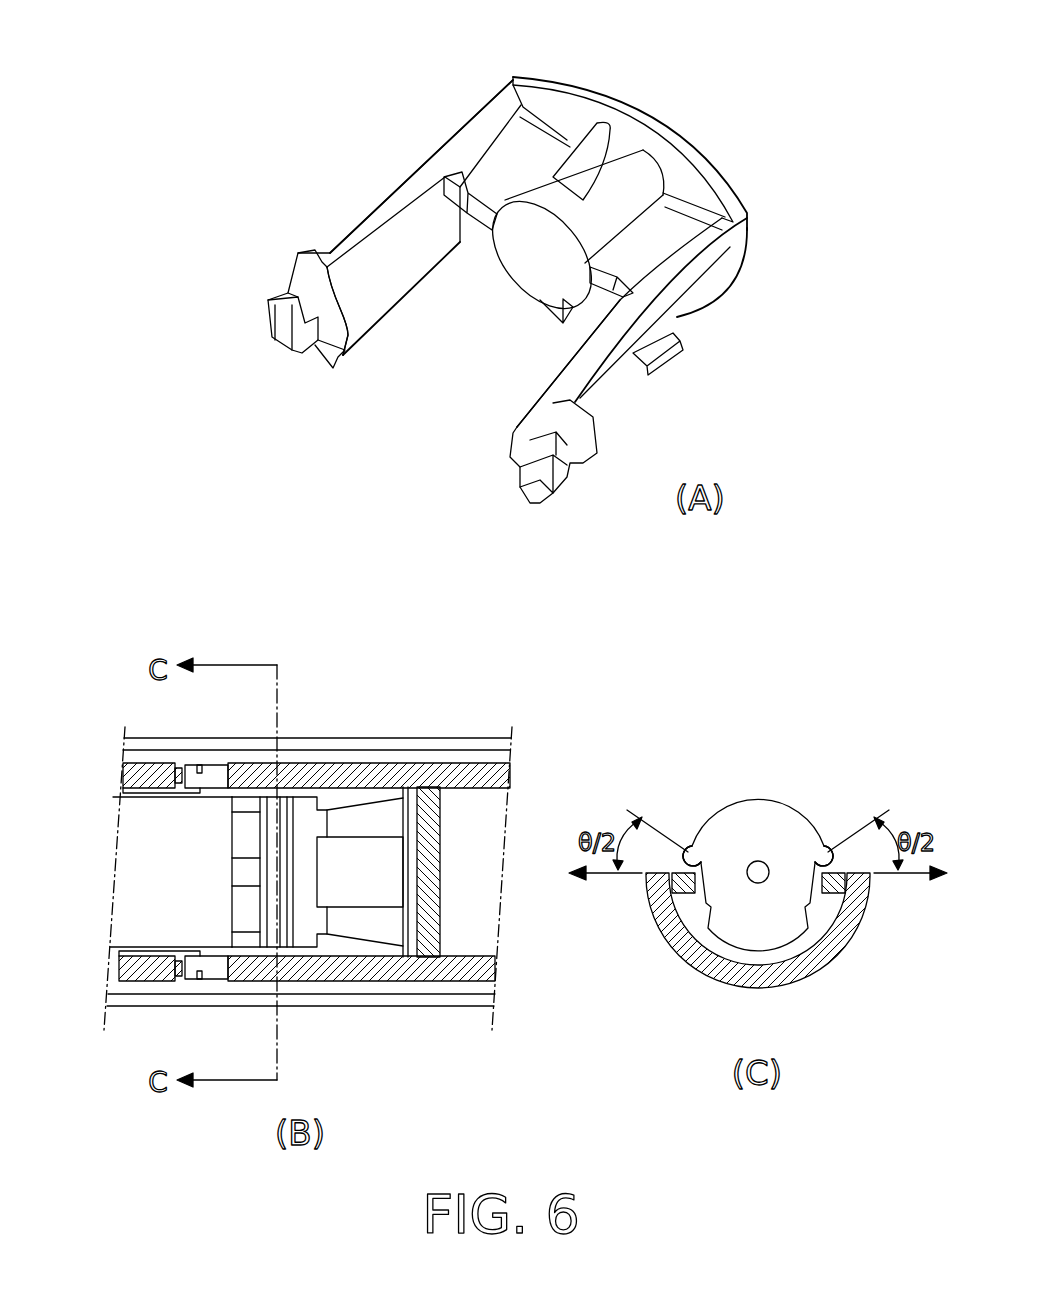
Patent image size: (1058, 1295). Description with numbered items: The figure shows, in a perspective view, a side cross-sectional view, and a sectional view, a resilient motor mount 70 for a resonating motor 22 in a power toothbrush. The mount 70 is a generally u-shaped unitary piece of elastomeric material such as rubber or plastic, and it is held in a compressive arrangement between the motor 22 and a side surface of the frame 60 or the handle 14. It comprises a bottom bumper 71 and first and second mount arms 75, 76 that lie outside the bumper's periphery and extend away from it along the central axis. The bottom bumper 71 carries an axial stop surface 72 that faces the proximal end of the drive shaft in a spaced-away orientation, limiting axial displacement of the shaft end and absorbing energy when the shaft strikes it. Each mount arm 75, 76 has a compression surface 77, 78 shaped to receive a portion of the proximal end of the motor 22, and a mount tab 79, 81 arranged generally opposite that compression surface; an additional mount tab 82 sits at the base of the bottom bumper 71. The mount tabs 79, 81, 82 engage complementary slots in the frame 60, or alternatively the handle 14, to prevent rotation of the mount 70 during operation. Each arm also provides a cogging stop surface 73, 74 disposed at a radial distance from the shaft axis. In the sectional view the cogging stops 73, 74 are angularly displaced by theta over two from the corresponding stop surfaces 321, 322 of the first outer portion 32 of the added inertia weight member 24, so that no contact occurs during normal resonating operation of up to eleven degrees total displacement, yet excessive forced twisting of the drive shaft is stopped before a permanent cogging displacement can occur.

The handle 14 is at (468, 745).
The motor 22 is at (152, 885).
The added inertia weight member 24 is at (258, 897).
The first outer portion 32 is at (758, 856).
The stop surface 321 is at (678, 853).
The stop surface 322 is at (838, 853).
The frame 60 is at (130, 780).
The resilient motor mount 70 is at (253, 133).
The bottom bumper 71 is at (543, 193).
The axial stop surface 72 is at (527, 267).
The cogging stop surface 73 is at (583, 355).
The cogging stop surface 74 is at (418, 185).
The first mount arm 75 is at (677, 312).
The second mount arm 76 is at (470, 123).
The compression surface 77 is at (543, 407).
The compression surface 78 is at (350, 287).
The mount tab 79 is at (520, 490).
The mount tab 81 is at (290, 355).
The mount tab 82 is at (553, 317).